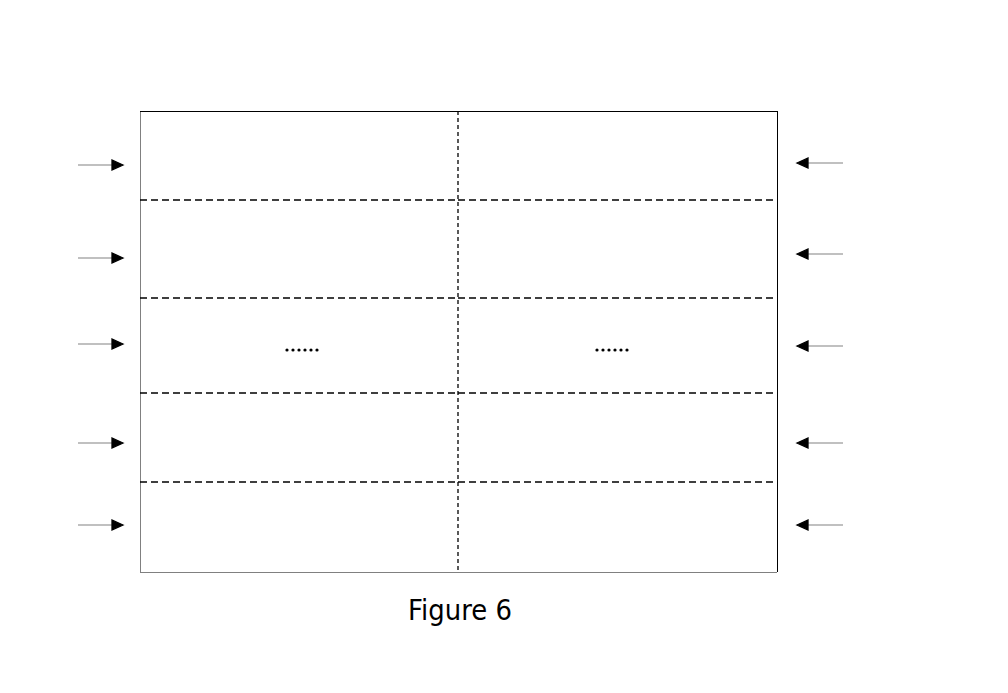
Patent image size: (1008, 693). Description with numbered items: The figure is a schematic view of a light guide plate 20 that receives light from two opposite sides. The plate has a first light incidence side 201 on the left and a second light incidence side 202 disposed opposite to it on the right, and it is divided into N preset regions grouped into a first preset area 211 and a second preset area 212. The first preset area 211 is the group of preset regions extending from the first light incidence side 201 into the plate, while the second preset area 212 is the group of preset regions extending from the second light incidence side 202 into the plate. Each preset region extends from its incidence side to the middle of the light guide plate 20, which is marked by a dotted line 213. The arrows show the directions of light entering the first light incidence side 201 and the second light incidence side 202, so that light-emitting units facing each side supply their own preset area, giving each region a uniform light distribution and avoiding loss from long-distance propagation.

The light guide plate 20 is at (460, 303).
The first light incidence side 201 is at (140, 141).
The second light incidence side 202 is at (777, 137).
The first preset area 211 is at (338, 127).
The second preset area 212 is at (670, 127).
The dotted line 213 is at (457, 125).